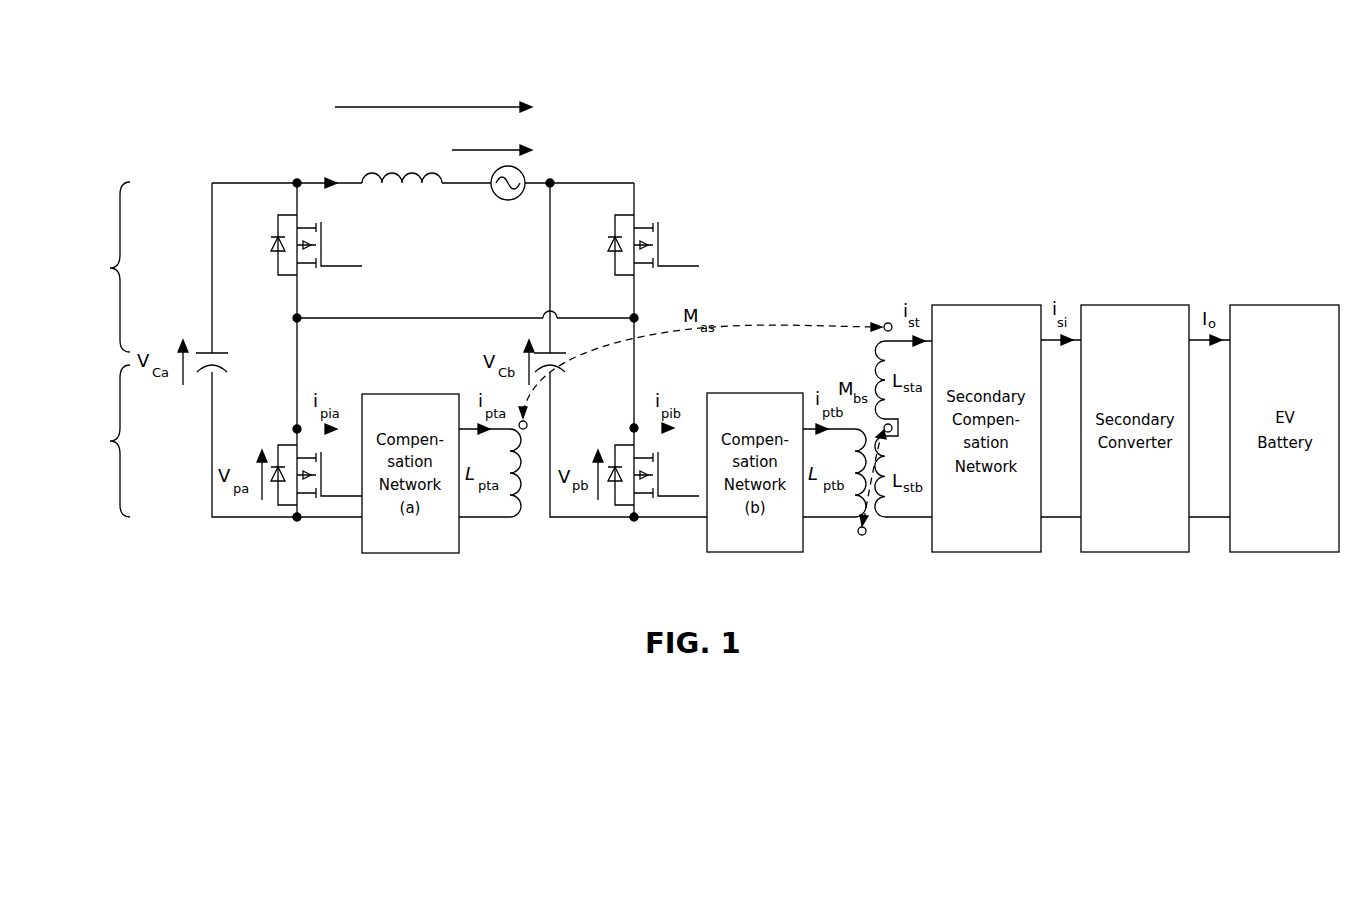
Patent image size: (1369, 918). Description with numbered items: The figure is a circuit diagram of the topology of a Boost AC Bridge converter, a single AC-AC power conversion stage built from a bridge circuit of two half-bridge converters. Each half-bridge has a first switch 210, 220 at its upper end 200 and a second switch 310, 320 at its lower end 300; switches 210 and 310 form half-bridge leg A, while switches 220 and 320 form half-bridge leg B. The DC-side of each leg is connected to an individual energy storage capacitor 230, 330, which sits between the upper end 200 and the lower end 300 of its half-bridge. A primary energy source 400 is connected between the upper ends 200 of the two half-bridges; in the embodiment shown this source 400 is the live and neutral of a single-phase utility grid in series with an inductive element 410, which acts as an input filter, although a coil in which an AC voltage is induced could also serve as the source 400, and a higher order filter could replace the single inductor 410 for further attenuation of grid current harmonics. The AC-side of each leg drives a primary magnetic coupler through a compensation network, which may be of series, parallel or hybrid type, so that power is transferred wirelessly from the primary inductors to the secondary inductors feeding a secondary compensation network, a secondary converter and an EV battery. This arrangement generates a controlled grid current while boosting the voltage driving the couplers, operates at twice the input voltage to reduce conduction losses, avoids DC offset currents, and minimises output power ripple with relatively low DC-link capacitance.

The upper end 200 is at (96, 267).
The lower end 300 is at (96, 441).
The primary energy source 400 is at (552, 70).
The first switch 210 is at (285, 202).
The first switch 220 is at (652, 194).
The capacitor 230 is at (232, 335).
The second switch 310 is at (284, 528).
The second switch 320 is at (620, 527).
The capacitor 330 is at (573, 311).
The inductive element 410 is at (419, 179).